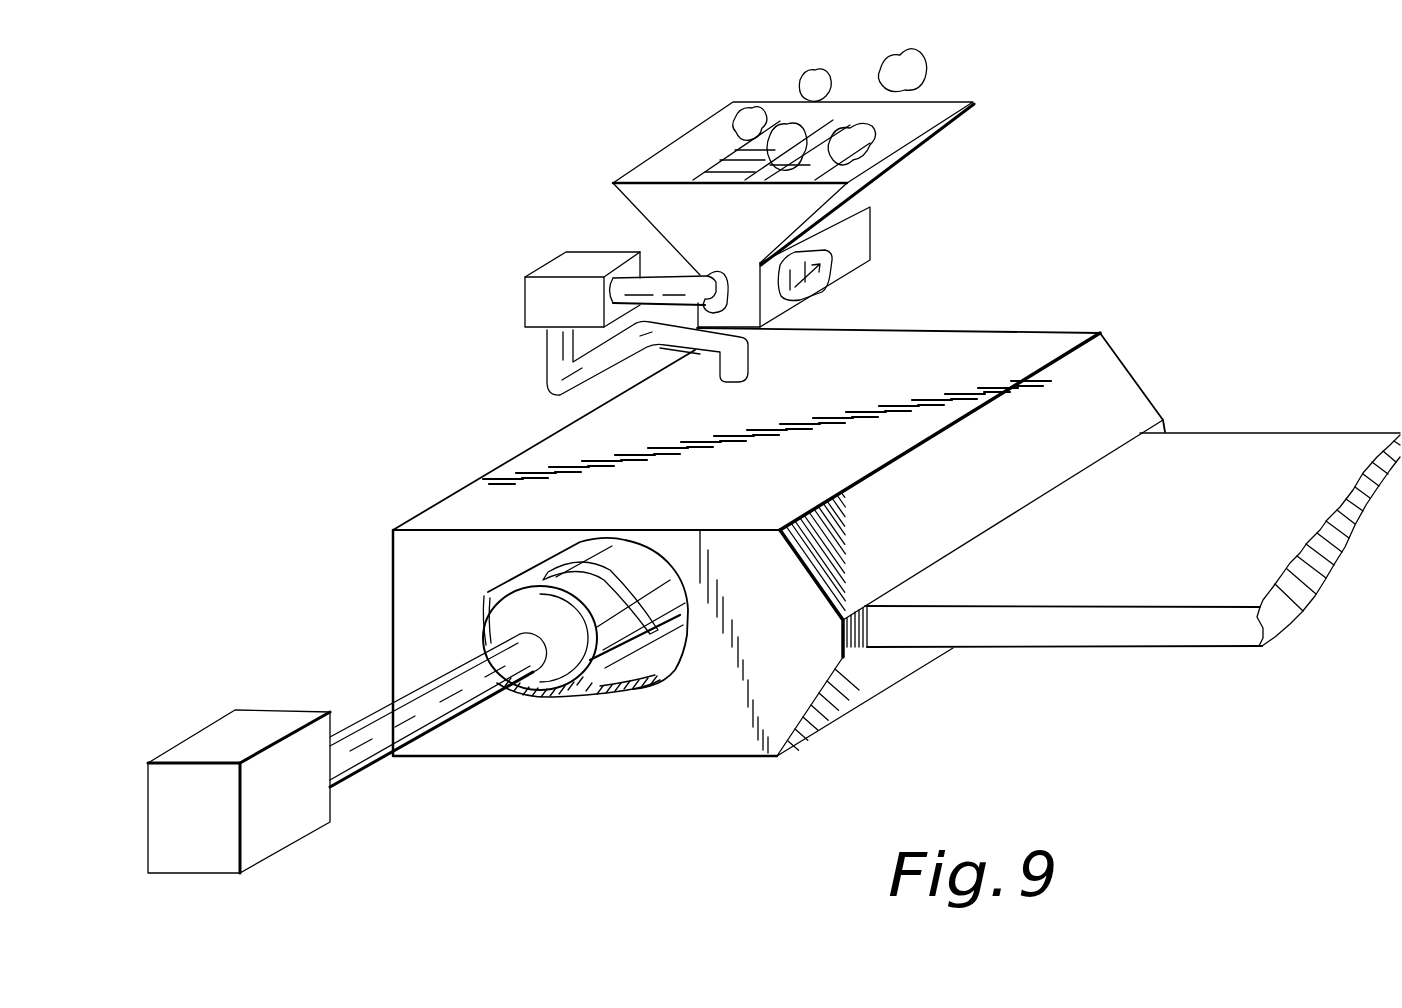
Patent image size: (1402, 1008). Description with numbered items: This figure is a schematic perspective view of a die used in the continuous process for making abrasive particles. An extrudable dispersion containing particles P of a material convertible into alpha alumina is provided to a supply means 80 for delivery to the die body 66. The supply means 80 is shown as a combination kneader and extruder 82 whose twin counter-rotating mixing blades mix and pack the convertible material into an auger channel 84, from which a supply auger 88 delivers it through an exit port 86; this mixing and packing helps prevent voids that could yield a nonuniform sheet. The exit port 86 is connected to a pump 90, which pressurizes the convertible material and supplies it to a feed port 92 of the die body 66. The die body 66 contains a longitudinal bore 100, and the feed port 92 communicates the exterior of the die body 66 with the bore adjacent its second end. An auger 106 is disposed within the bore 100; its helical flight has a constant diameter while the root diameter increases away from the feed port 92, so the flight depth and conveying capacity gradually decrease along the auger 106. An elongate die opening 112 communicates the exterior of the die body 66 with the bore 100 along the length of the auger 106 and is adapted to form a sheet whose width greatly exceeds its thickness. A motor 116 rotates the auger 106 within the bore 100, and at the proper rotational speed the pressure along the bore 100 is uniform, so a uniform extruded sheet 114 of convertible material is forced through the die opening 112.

The die body 66 is at (732, 782).
The supply means 80 is at (923, 112).
The combination kneader and extruder 82 is at (817, 165).
The auger channel 84 is at (800, 258).
The supply auger 88 is at (812, 270).
The exit port 86 is at (660, 283).
The pump 90 is at (567, 263).
The feed port 92 is at (747, 382).
The longitudinal bore 100 is at (618, 665).
The auger 106 is at (370, 737).
The elongate die opening 112 is at (870, 628).
The extruded sheet 114 is at (1283, 450).
The motor 116 is at (218, 737).
The particles P is at (787, 137).